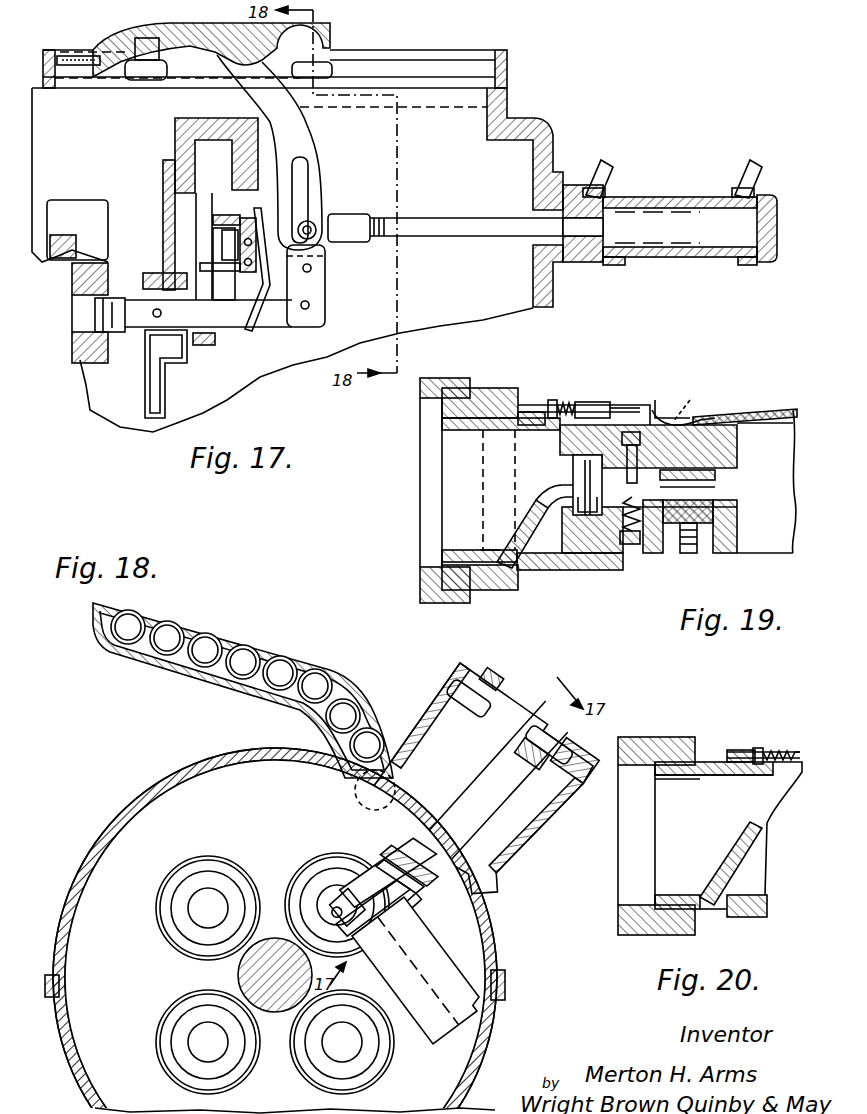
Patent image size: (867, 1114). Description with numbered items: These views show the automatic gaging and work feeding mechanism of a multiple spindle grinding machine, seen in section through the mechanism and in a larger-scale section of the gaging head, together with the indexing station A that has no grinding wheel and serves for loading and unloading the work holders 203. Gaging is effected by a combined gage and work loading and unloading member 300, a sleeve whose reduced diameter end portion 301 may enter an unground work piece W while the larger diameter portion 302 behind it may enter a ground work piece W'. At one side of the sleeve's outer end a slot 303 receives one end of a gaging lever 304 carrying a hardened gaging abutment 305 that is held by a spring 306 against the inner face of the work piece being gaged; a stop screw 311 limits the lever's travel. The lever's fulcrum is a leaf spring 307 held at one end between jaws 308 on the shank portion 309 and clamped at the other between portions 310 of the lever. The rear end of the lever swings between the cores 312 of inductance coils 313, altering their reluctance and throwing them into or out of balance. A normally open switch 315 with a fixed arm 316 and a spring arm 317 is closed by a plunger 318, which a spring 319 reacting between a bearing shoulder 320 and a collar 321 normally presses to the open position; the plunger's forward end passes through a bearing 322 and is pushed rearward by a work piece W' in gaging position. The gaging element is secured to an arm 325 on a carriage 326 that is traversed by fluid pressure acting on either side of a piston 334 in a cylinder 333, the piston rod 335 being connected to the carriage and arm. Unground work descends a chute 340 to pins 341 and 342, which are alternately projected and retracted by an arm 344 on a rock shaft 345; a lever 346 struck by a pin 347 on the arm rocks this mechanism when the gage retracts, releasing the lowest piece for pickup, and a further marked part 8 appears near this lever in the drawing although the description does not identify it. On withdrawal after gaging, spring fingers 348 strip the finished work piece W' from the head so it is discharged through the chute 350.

In FIG. 17, the work holder 203 is at (105, 247).
In FIG. 17, the combined gage and work loading and unloading member 300 is at (105, 313).
In FIG. 19, the combined gage and work loading and unloading member 300 is at (575, 570).
In FIG. 19, the reduced diameter end portion 301 is at (446, 424).
In FIG. 20, the reduced diameter end portion 301 is at (674, 771).
In FIG. 19, the larger diameter portion 302 is at (482, 420).
In FIG. 20, the larger diameter portion 302 is at (712, 762).
In FIG. 19, the slot 303 is at (505, 565).
In FIG. 20, the slot 303 is at (727, 900).
In FIG. 19, the gaging lever 304 is at (515, 545).
In FIG. 20, the gaging lever 304 is at (748, 840).
In FIG. 19, the hardened gaging abutment 305 is at (482, 570).
In FIG. 20, the hardened gaging abutment 305 is at (710, 910).
In FIG. 19, the spring 306 is at (640, 545).
In FIG. 19, the leaf spring 307 is at (584, 476).
In FIG. 19, the jaws 308 is at (587, 460).
In FIG. 19, the shank portion 309 is at (738, 448).
In FIG. 19, the portions of the arm 310 is at (578, 505).
In FIG. 19, the stop screw 311 is at (693, 402).
In FIG. 19, the cores 312 is at (716, 477).
In FIG. 19, the inductance coils 313 is at (702, 553).
In FIG. 19, the normally open switch 315 is at (657, 402).
In FIG. 19, the fixed arm 316 is at (662, 414).
In FIG. 19, the spring arm 317 is at (645, 404).
In FIG. 19, the plunger 318 is at (608, 400).
In FIG. 20, the plunger 318 is at (745, 748).
In FIG. 19, the spring 319 is at (578, 400).
In FIG. 19, the bearing shoulder 320 is at (588, 402).
In FIG. 19, the collar 321 is at (552, 400).
In FIG. 19, the bearing 322 is at (530, 403).
In FIG. 20, the bearing 322 is at (768, 748).
In FIG. 17, the arm 325 is at (223, 315).
In FIG. 19, the arm 325 is at (778, 545).
In FIG. 17, the carriage 326 is at (207, 48).
In FIG. 18, the carriage 326 is at (483, 748).
In FIG. 17, the cylinder 333 is at (678, 205).
In FIG. 17, the piston 334 is at (600, 208).
In FIG. 17, the piston rod 335 is at (465, 226).
In FIG. 18, the piston rod 335 is at (601, 808).
In FIG. 17, the chute 340 is at (205, 215).
In FIG. 18, the chute 340 is at (298, 655).
In FIG. 17, the pin 341 is at (233, 230).
In FIG. 18, the pin 341 is at (621, 825).
In FIG. 17, the pin 342 is at (220, 285).
In FIG. 18, the pin 342 is at (600, 880).
In FIG. 17, the arm 344 is at (248, 240).
In FIG. 18, the arm 344 is at (623, 832).
In FIG. 17, the rock shaft 345 is at (252, 246).
In FIG. 17, the lever 346 is at (250, 312).
In FIG. 18, the lever 346 is at (624, 944).
In FIG. 17, the pin 347 is at (154, 317).
In FIG. 18, the pin 347 is at (598, 912).
In FIG. 17, the spring fingers 348 is at (152, 275).
In FIG. 17, the chute 350 is at (158, 388).
In FIG. 18, the chute 350 is at (435, 993).
In FIG. 18, the pin 8 is at (596, 888).
In FIG. 18, the loading and unloading station A is at (322, 872).
In FIG. 20, the unground work piece W is at (656, 816).
In FIG. 19, the ground work piece W' is at (459, 475).